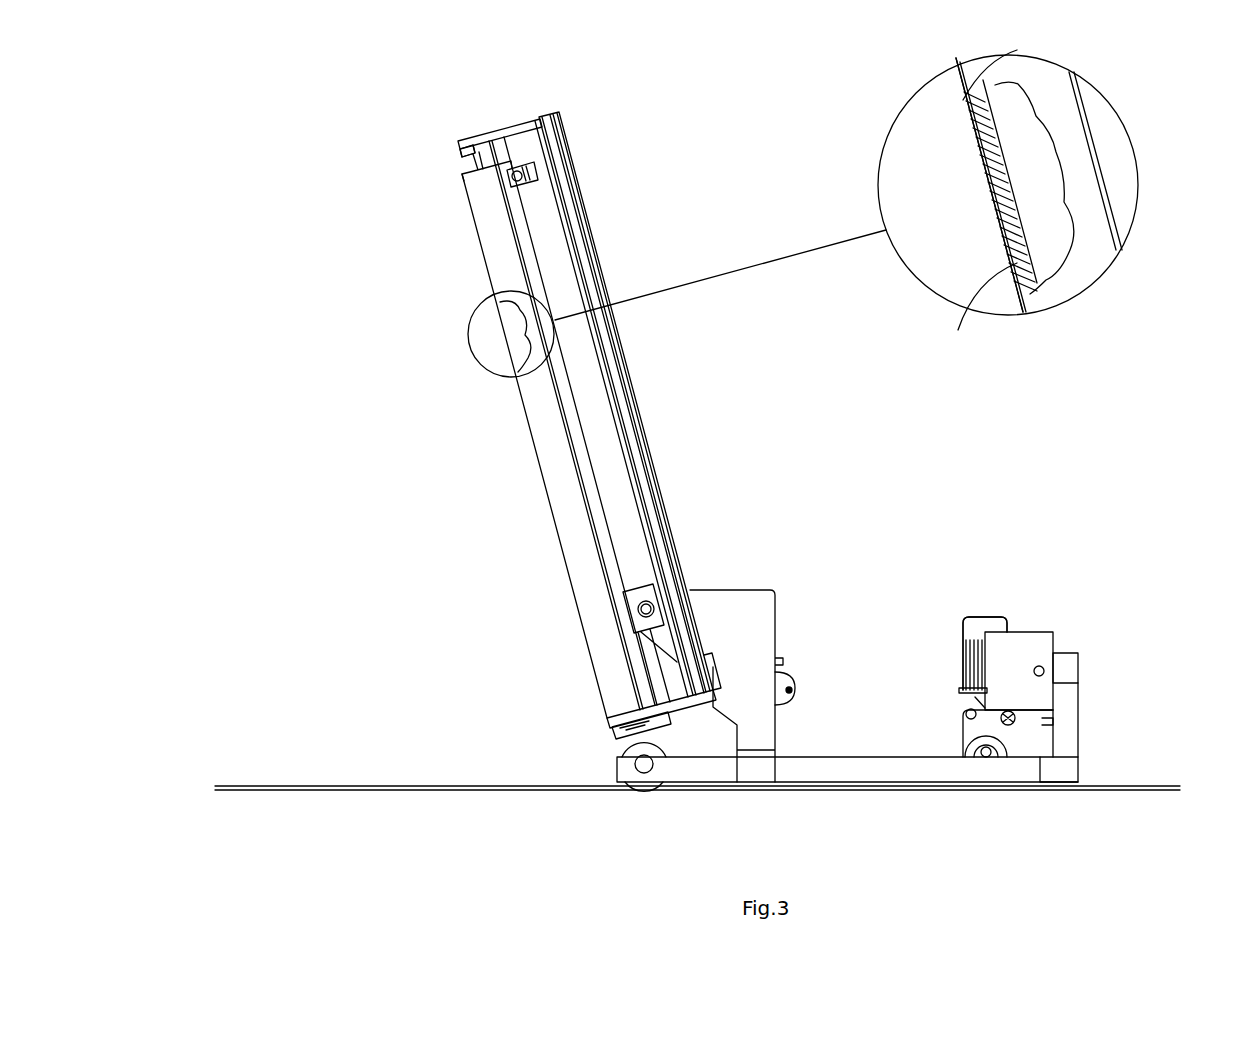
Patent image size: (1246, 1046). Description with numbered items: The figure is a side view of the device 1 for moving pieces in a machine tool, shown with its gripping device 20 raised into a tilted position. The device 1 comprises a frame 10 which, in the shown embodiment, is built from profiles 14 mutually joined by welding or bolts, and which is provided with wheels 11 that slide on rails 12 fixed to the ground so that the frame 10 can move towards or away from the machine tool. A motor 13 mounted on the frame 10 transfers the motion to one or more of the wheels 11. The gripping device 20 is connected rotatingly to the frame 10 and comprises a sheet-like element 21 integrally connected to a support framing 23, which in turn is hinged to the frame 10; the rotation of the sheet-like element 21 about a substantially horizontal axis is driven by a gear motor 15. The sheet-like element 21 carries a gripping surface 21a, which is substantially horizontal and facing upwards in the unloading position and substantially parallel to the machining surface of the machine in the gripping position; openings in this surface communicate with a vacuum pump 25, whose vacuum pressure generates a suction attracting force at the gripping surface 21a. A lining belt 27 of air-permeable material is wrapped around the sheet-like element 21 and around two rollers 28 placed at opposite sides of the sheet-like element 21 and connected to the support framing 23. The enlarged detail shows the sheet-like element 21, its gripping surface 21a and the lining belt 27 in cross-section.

The device for moving pieces 1 is at (255, 126).
The frame 10 is at (1093, 609).
The wheels 11 is at (640, 753).
The rails 12 is at (400, 785).
The motor 13 is at (988, 622).
The profiles 14 is at (1068, 664).
The gear motor 15 is at (797, 680).
The gripping device 20 is at (778, 425).
The sheet-like element 21 is at (505, 324).
The gripping surface 21a is at (1005, 300).
The support framing 23 is at (575, 212).
The vacuum pump 25 is at (985, 742).
The lining belt 27 is at (963, 100).
The rollers 28 is at (468, 178).